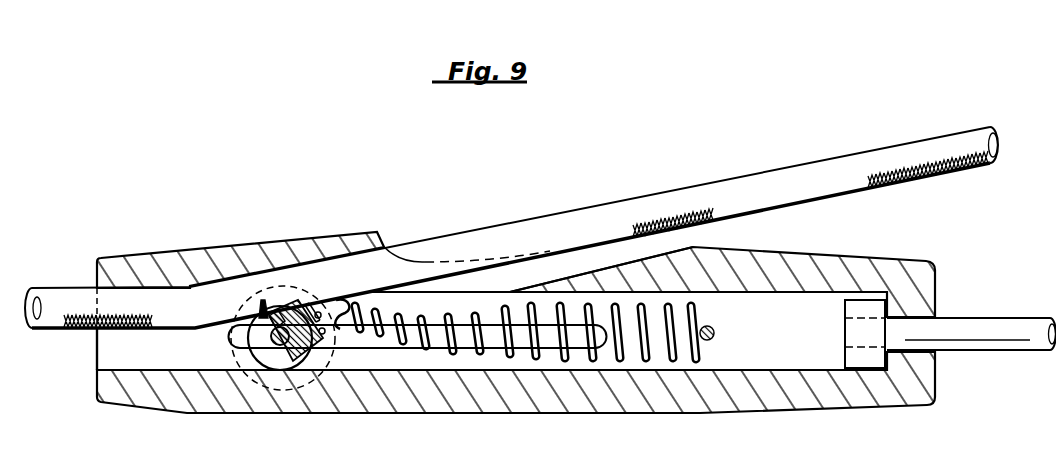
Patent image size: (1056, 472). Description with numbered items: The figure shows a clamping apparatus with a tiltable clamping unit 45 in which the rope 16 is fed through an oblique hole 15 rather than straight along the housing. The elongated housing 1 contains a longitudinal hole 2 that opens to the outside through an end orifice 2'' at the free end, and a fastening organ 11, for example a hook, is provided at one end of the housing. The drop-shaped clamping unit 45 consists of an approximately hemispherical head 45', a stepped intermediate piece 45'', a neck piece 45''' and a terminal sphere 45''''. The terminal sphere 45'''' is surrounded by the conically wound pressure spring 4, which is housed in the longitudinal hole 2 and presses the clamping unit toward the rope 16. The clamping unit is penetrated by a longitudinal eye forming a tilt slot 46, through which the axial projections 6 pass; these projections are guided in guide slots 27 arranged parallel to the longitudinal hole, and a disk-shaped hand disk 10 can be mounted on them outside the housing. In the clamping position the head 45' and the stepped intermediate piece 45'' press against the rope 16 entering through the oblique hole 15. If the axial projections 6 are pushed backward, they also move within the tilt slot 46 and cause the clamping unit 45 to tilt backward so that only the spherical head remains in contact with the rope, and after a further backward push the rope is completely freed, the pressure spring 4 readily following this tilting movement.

The housing 1 is at (157, 270).
The longitudinal hole 2 is at (492, 372).
The end orifice 2'' is at (75, 376).
The pressure spring 4 is at (480, 354).
The axial projections 6 is at (273, 345).
The hand disk 10 is at (282, 392).
The fastening organ 11 is at (1000, 335).
The oblique hole 15 is at (563, 263).
The cable 16 is at (63, 297).
The guide slots 27 is at (378, 343).
The clamping unit 45 is at (247, 249).
The hemispherical head 45' is at (237, 376).
The stepped intermediate piece 45'' is at (280, 258).
The neck piece 45''' is at (338, 390).
The terminal sphere 45'''' is at (359, 253).
The tilt slot 46 is at (284, 318).